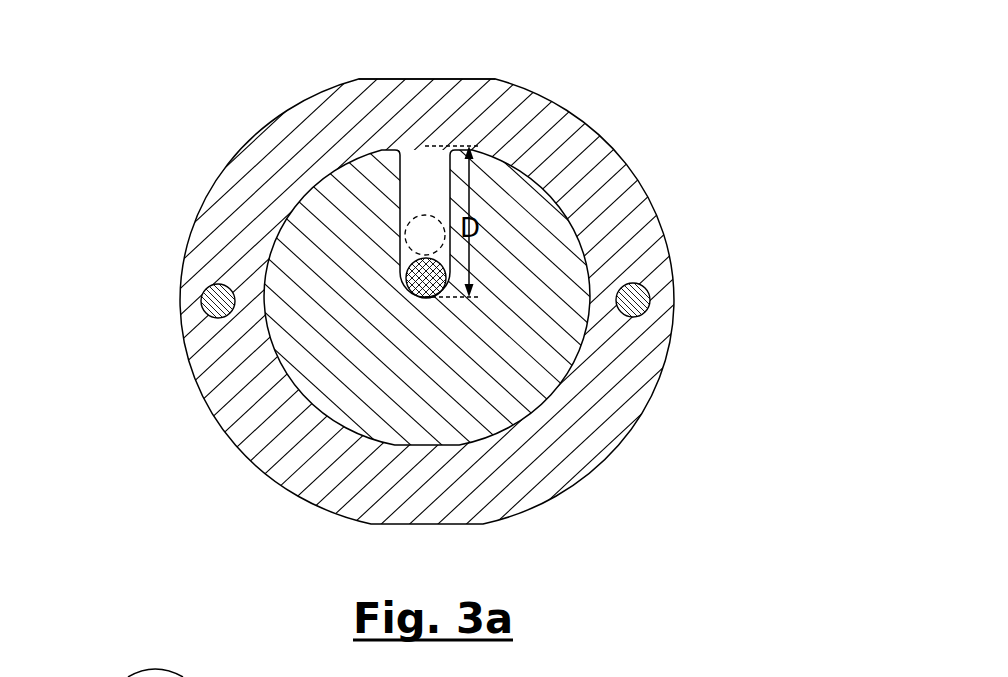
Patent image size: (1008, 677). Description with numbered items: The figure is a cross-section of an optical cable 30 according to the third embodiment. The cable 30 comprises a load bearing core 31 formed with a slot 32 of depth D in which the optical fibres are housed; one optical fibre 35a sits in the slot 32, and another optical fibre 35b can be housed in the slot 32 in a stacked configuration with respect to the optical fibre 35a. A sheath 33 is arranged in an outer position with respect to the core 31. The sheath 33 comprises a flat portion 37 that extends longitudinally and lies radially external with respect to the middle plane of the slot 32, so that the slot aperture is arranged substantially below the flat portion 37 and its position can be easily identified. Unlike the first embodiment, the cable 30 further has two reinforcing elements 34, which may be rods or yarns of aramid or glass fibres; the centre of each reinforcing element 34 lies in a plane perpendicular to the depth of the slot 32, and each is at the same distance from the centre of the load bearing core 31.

The cable 30 is at (682, 155).
The load bearing core 31 is at (557, 278).
The slot 32 is at (410, 188).
The sheath 33 is at (642, 208).
The reinforcing elements 34 is at (220, 293).
The optical fibre 35a is at (424, 280).
The optical fibre 35b is at (427, 225).
The flat portion 37 is at (442, 79).